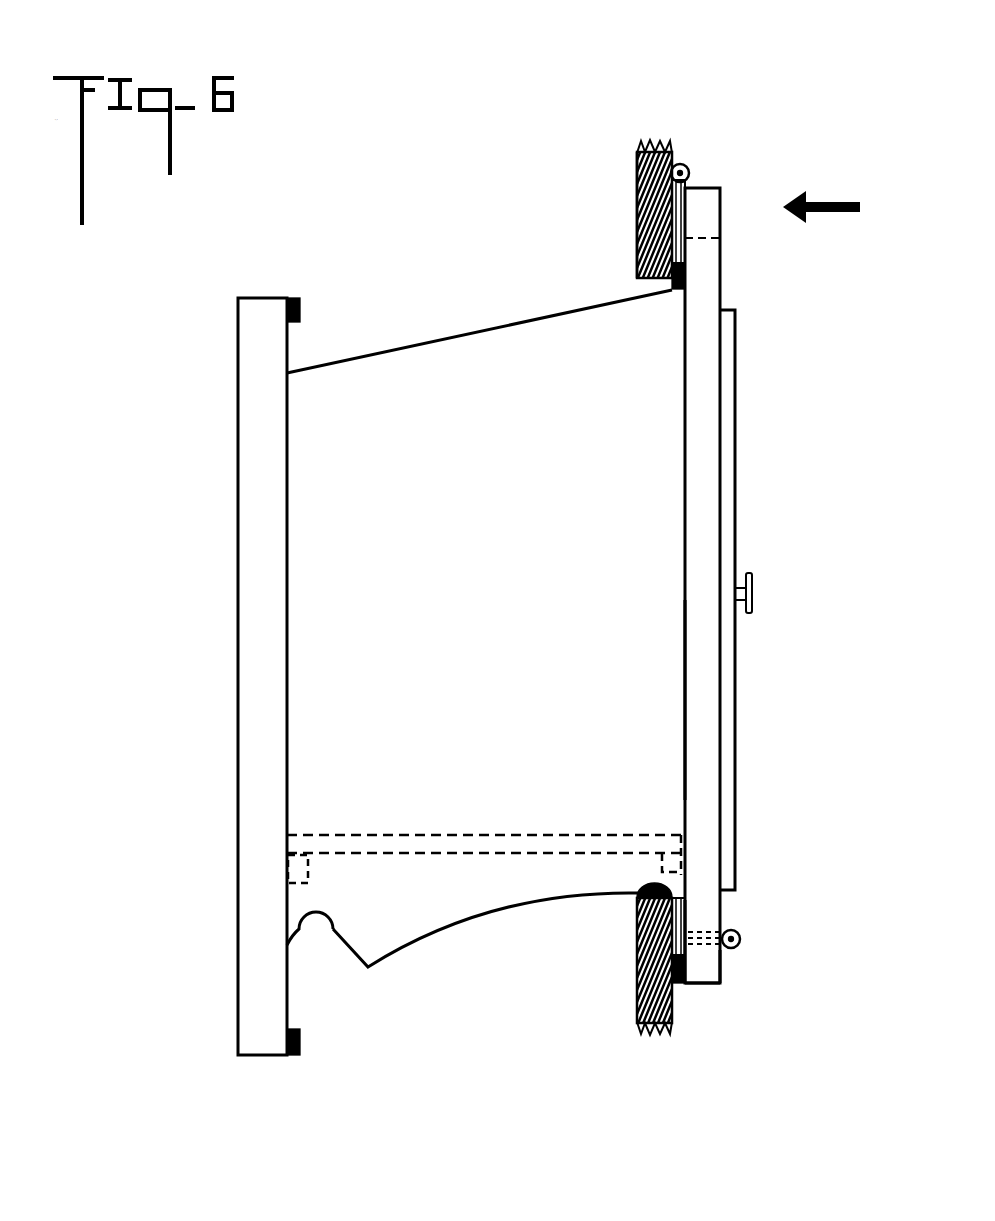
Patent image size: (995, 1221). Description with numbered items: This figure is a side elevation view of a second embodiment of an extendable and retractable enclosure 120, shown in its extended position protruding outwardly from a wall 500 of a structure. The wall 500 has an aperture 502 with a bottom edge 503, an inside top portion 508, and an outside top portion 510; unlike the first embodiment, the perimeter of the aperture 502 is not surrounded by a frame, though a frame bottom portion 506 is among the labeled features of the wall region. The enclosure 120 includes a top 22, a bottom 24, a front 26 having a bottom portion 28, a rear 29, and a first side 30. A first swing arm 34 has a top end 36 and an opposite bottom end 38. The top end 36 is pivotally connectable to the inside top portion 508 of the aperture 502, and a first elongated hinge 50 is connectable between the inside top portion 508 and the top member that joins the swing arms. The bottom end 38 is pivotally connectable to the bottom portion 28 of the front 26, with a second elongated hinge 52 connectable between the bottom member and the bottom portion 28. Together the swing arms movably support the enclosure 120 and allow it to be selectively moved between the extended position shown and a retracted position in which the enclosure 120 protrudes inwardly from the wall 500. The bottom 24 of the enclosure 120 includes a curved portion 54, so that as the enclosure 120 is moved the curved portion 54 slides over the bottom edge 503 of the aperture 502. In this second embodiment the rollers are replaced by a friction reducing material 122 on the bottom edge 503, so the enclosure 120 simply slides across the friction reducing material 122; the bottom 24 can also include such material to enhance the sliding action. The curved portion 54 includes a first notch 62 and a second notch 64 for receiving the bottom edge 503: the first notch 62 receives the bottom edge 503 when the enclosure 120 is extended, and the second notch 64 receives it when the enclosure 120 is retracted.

The top 22 is at (452, 338).
The bottom 24 is at (518, 948).
The front 26 is at (731, 418).
The bottom portion 28 is at (708, 920).
The rear 29 is at (238, 623).
The first side 30 is at (317, 748).
The first swing arm 34 is at (710, 713).
The top end 36 is at (708, 212).
The bottom end 38 is at (705, 965).
The first elongated hinge 50 is at (690, 174).
The second elongated hinge 52 is at (740, 947).
The curved portion 54 is at (447, 923).
The first notch 62 is at (640, 887).
The second notch 64 is at (333, 922).
The extendable and retractable enclosure 120 is at (498, 274).
The friction reducing material 122 is at (640, 897).
The wall 500 is at (656, 148).
The aperture 502 is at (652, 287).
The bottom edge 503 is at (635, 935).
The bottom portion 506 is at (672, 993).
The inside top portion 508 is at (684, 164).
The outside top portion 510 is at (637, 224).